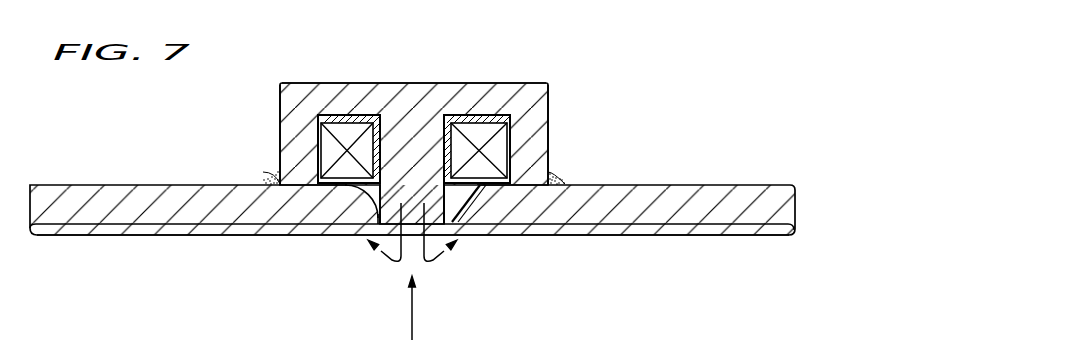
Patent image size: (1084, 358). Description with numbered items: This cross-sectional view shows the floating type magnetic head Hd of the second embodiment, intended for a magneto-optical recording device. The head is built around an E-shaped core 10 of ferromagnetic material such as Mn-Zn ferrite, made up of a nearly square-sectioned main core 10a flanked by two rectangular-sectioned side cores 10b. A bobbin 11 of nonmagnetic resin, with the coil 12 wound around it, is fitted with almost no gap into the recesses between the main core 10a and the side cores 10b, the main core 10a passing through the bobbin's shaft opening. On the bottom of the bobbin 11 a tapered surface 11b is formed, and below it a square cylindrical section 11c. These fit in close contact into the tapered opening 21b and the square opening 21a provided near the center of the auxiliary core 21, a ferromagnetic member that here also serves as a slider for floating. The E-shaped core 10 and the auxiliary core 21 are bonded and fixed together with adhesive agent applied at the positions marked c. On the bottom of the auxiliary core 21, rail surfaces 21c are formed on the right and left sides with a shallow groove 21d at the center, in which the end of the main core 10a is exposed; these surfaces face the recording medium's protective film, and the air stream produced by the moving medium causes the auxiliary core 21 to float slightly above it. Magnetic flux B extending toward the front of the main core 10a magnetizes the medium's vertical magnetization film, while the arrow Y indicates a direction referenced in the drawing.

The magnetic head Hd is at (355, 64).
The E-shaped core 10 is at (446, 72).
The main core 10a is at (410, 167).
The side core 10b is at (288, 133).
The bobbin 11 is at (479, 100).
The coil 12 is at (531, 84).
The tapered surface 11b is at (472, 200).
The square cylindrical section 11c is at (447, 234).
The adhesive agent positions c is at (255, 167).
The auxiliary core 21 is at (688, 176).
The square opening 21a is at (375, 230).
The tapered opening 21b is at (368, 186).
The rail surface 21c is at (706, 238).
The shallow groove 21d is at (635, 226).
The magnetic flux B is at (412, 250).
The direction Y is at (411, 317).